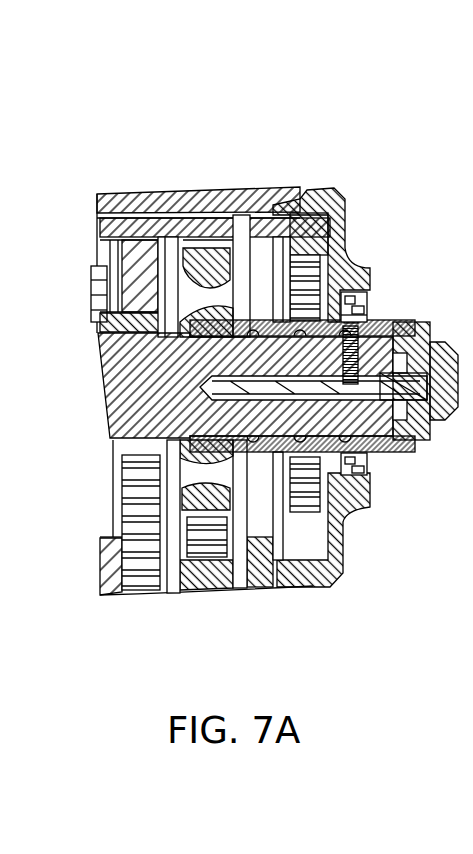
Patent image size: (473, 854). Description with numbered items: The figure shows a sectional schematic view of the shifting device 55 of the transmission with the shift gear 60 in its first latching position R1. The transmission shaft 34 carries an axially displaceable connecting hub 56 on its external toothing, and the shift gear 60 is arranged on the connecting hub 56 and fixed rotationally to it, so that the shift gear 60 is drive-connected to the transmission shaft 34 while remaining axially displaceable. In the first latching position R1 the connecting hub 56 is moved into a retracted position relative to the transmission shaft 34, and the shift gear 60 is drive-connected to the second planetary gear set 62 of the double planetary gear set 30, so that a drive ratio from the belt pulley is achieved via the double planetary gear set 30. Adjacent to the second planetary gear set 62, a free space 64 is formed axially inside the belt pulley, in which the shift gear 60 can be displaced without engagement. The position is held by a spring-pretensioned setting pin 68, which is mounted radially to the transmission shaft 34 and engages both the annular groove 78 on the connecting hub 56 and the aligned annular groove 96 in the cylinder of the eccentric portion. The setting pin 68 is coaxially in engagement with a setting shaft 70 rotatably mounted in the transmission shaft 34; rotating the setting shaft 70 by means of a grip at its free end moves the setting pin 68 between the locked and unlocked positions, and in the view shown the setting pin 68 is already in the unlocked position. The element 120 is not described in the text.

The first latching position R1 is at (183, 130).
The shift gear 60 is at (172, 265).
The second planetary gear set 62 is at (222, 270).
The free space 64 is at (253, 278).
The annular groove 78 is at (350, 250).
The shifting device 55 is at (372, 318).
The setting pin 68 is at (392, 325).
The connecting hub 56 is at (415, 333).
The retaining ring 120 is at (440, 343).
The annular groove 96 is at (340, 381).
The transmission shaft 34 is at (380, 448).
The double planetary gear set 30 is at (170, 550).
The setting shaft 70 is at (243, 457).